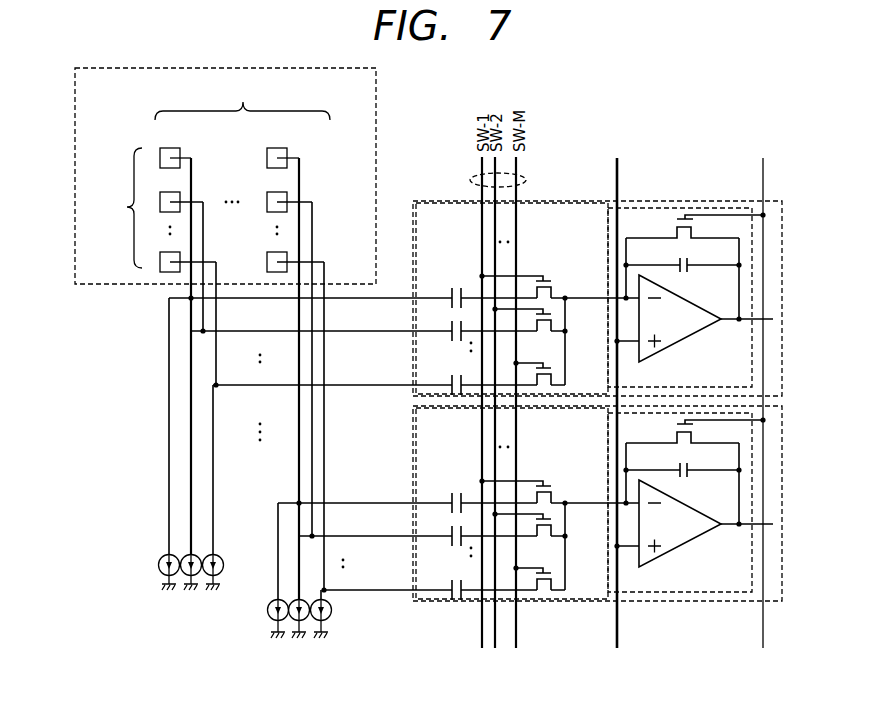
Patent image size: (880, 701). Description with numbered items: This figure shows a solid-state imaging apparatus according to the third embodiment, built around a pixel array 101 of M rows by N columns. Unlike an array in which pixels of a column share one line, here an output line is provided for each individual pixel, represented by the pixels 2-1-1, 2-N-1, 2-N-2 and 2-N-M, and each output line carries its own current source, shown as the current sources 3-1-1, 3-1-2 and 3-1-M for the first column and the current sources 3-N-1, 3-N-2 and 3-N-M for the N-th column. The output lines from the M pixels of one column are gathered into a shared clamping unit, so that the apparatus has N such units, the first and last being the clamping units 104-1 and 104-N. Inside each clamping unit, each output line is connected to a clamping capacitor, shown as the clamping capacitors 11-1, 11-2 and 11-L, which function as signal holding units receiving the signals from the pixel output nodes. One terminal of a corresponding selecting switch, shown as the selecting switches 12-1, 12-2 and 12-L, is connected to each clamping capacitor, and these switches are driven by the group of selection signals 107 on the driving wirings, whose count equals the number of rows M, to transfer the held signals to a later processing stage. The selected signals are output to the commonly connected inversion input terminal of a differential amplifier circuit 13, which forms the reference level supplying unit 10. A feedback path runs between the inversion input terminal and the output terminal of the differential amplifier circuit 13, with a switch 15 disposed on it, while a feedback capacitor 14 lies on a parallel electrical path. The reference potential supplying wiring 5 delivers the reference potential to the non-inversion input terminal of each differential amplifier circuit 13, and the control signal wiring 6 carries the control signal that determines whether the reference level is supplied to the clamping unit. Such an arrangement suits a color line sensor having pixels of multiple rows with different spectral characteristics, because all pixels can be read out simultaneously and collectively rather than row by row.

The pixel array 101 is at (76, 112).
The pixel 2-1-1 is at (164, 149).
The pixel 2-N-1 is at (271, 149).
The pixel 2-N-2 is at (270, 195).
The pixel 2-N-M is at (271, 254).
The current source 3-1-1 is at (165, 555).
The current source 3-1-2 is at (189, 579).
The current source 3-1-M is at (217, 556).
The current source 3-N-1 is at (274, 601).
The current source 3-N-2 is at (297, 631).
The current source 3-N-M is at (331, 615).
The group of selection signals 107 is at (526, 180).
The reference potential supplying wiring 5 is at (619, 194).
The control signal wiring 6 is at (764, 194).
The reference level supplying unit 10 is at (606, 236).
The clamping capacitor 11-1 is at (459, 286).
The clamping capacitor 11-2 is at (456, 320).
The clamping capacitor 11-L is at (455, 378).
The selecting switch 12-1 is at (552, 281).
The selecting switch 12-2 is at (552, 315).
The selecting switch 12-L is at (552, 369).
The differential amplifier circuit 13 is at (689, 346).
The feedback capacitor 14 is at (687, 274).
The switch 15 is at (676, 230).
The clamping unit 104-1 is at (782, 253).
The clamping unit 104-N is at (782, 462).